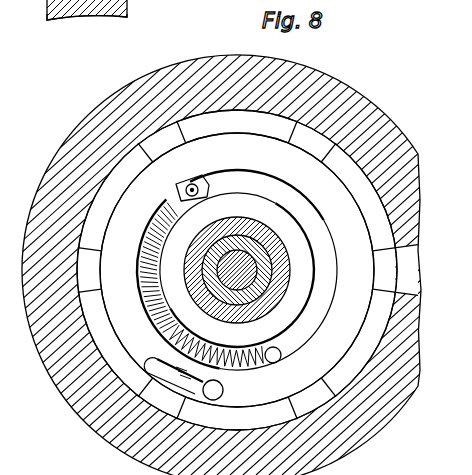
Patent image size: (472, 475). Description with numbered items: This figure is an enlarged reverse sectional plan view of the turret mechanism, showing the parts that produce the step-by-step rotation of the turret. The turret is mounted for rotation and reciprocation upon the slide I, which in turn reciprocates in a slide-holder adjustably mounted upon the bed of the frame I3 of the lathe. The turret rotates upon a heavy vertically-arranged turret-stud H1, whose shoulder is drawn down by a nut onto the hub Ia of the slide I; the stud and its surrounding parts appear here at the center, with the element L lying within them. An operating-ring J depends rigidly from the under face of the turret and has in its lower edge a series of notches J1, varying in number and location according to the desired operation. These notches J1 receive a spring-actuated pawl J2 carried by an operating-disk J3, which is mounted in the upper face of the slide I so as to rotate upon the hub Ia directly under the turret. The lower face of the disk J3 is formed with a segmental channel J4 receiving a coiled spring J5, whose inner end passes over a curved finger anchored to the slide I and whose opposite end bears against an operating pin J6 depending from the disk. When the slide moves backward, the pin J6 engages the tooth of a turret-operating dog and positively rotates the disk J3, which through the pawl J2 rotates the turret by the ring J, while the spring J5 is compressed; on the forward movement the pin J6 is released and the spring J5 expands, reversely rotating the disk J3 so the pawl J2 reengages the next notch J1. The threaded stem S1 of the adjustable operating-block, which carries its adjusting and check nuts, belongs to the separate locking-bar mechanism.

The slide I is at (143, 73).
The frame I3 is at (127, 7).
The threaded stem S1 is at (82, 8).
The hub Ia is at (253, 222).
The turret-stud H1 is at (273, 243).
The shaft L is at (258, 265).
The operating-ring J is at (237, 270).
The notches J1 is at (247, 270).
The spring-actuated pawl J2 is at (192, 183).
The operating-disk J3 is at (237, 270).
The segmental channel J4 is at (236, 172).
The coiled spring J5 is at (137, 264).
The operating pin J6 is at (281, 354).